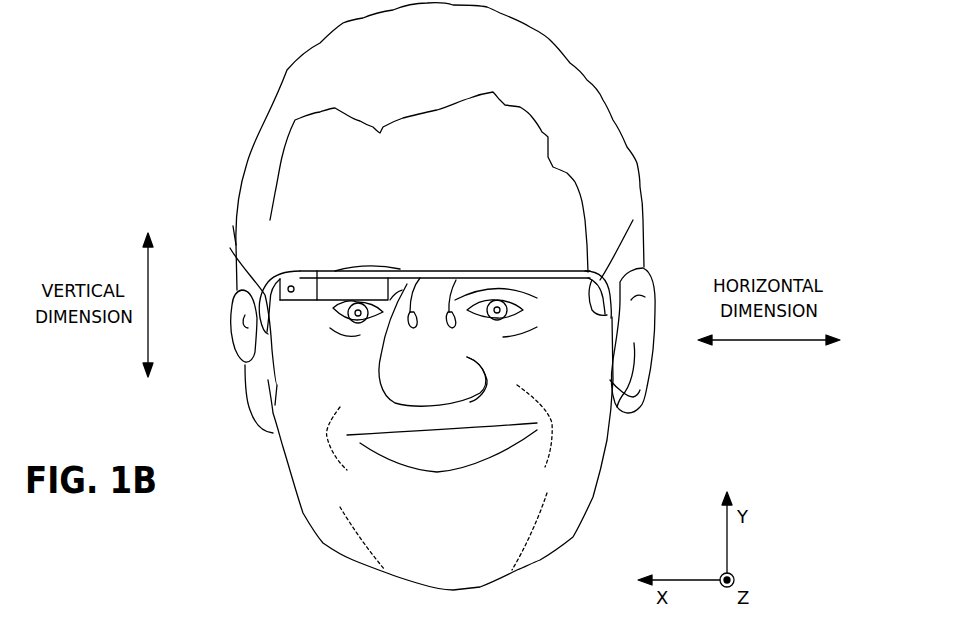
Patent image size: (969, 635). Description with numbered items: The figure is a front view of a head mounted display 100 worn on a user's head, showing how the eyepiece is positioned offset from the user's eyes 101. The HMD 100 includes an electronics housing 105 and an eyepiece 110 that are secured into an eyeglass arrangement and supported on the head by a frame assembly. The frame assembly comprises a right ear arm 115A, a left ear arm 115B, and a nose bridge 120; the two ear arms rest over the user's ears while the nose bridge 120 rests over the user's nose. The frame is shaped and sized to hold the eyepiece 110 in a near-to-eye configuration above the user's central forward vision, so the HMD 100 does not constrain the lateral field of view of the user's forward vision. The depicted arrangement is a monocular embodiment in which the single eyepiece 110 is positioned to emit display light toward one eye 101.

The head mounted display 100 is at (268, 214).
The user's eye 101 is at (450, 63).
The electronics housing 105 is at (243, 356).
The eyepiece 110 is at (384, 278).
The right ear arm 115A is at (233, 226).
The left ear arm 115B is at (633, 220).
The nose bridge 120 is at (381, 357).